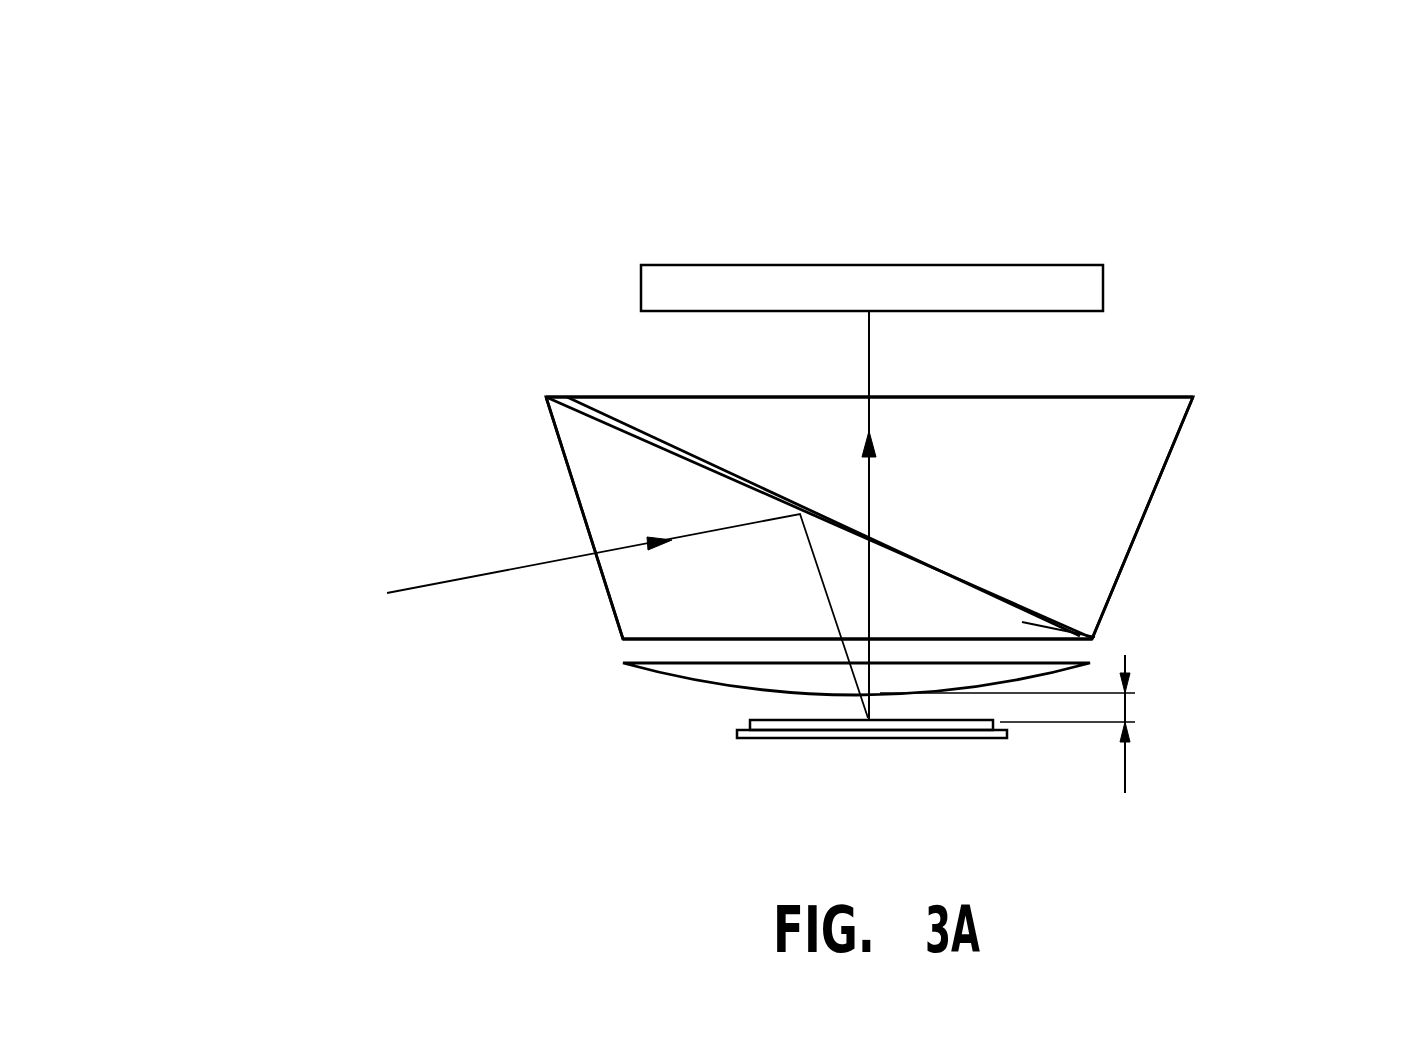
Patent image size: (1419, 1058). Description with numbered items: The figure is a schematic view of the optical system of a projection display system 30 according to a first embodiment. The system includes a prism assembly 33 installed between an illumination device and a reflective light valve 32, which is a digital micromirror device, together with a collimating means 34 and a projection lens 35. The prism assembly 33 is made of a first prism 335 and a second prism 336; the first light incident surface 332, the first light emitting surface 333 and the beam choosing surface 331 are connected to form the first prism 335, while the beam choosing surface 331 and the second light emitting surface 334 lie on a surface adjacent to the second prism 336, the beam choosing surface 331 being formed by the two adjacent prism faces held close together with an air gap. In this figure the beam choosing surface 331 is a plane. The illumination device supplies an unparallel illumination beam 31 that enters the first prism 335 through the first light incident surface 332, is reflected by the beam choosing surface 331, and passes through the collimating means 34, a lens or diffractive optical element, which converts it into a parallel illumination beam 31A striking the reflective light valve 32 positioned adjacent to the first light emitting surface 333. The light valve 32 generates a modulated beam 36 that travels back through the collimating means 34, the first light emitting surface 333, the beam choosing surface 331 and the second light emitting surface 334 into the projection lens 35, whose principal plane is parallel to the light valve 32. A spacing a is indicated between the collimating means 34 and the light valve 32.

The projection display system 30 is at (243, 180).
The unparallel illumination beam 31 is at (447, 583).
The parallel illumination beam 31A is at (862, 702).
The reflective light valve 32 is at (803, 732).
The prism assembly 33 is at (905, 496).
The beam choosing surface 331 is at (613, 430).
The first light incident surface 332 is at (569, 476).
The first light emitting surface 333 is at (673, 640).
The second light emitting surface 334 is at (1087, 398).
The first prism 335 is at (1095, 637).
The second prism 336 is at (1100, 558).
The collimating means 34 is at (790, 693).
The projection lens 35 is at (703, 273).
The modulated beam 36 is at (869, 363).
The distance a is at (1025, 724).